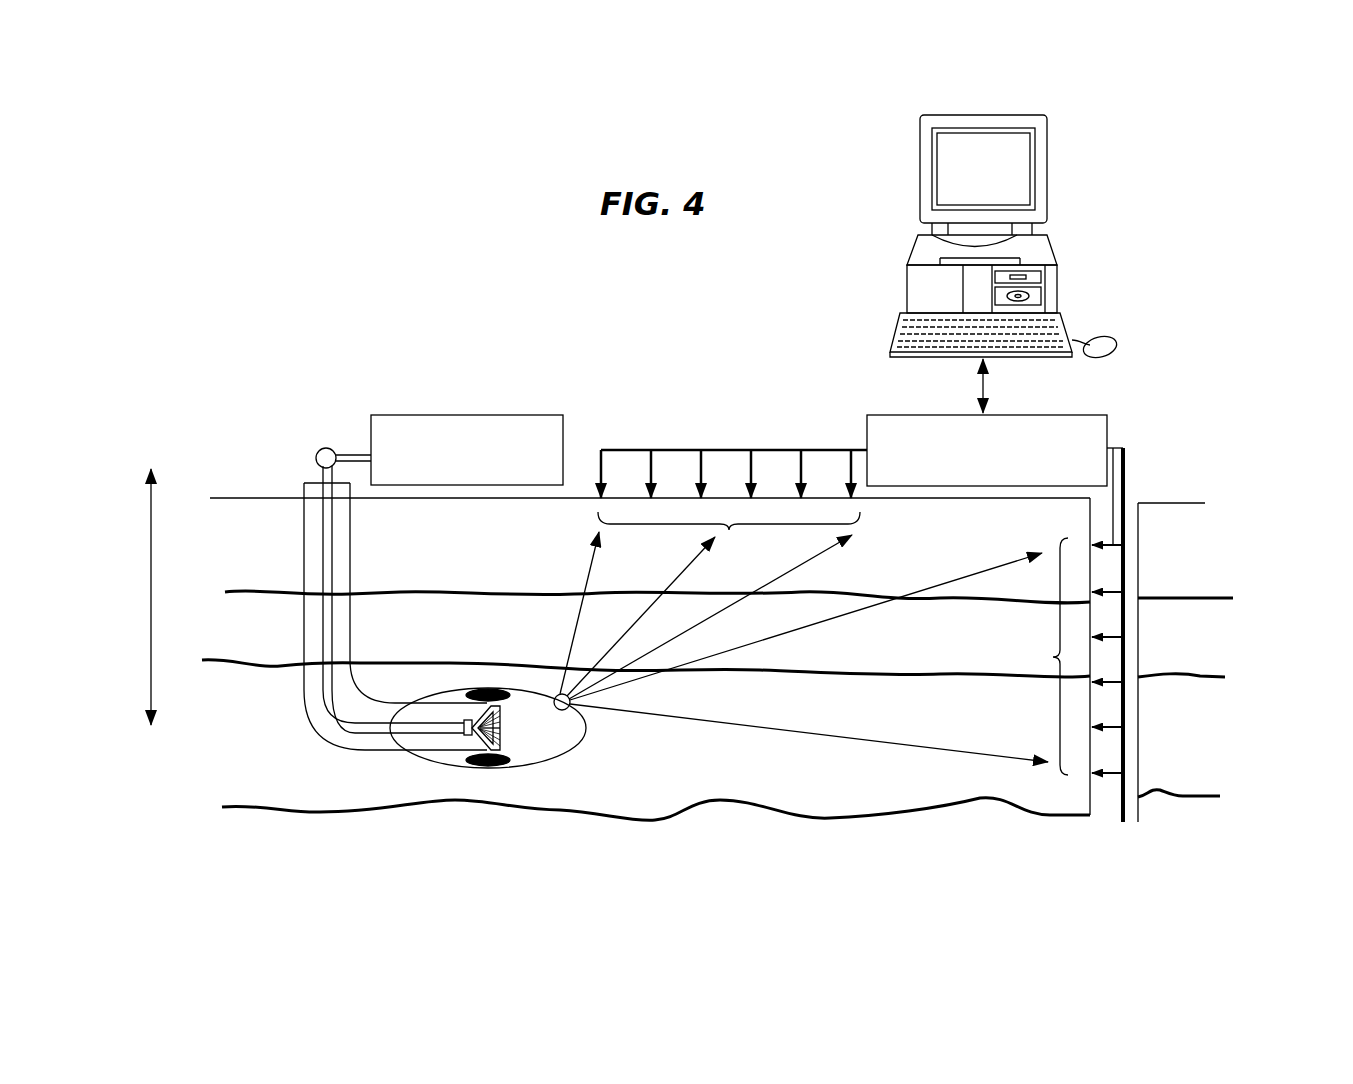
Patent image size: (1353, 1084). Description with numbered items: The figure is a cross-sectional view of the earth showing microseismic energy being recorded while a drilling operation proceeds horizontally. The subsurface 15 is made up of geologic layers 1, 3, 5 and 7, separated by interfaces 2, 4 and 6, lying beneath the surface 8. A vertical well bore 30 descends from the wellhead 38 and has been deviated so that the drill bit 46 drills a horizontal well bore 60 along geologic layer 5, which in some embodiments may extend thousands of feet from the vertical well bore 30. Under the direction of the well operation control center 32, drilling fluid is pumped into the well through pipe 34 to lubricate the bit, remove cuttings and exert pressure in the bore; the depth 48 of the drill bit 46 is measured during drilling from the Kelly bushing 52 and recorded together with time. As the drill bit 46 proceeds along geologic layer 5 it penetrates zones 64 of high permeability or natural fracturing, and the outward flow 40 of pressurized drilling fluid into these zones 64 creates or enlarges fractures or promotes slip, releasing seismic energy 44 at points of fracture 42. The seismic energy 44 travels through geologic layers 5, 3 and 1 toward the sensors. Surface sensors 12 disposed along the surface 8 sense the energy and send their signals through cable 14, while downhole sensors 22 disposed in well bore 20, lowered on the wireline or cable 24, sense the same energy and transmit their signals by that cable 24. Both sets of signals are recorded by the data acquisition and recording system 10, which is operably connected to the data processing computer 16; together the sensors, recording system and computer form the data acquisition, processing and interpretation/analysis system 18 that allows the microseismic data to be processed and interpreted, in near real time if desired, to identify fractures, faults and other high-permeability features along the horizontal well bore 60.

The geologic layer 1 is at (838, 586).
The interface 2 is at (935, 600).
The geologic layer 3 is at (838, 654).
The interface 4 is at (960, 680).
The geologic layer 5 is at (838, 717).
The interface 6 is at (938, 820).
The geologic layer 7 is at (838, 879).
The surface 8 is at (208, 495).
The data acquisition and recording system 10 is at (1107, 428).
The surface sensors 12 is at (729, 536).
The cable 14 is at (730, 450).
The subsurface 15 is at (1235, 565).
The data processing computer 16 is at (1055, 248).
The data acquisition, processing and interpretation/analysis system 18 is at (1212, 242).
The well bore 20 is at (1138, 628).
The downhole sensors 22 is at (1072, 656).
The wireline or cable 24 is at (1125, 478).
The vertical well bore 30 is at (305, 540).
The well operation control center 32 is at (448, 415).
The pipe 34 is at (332, 548).
The wellhead 38 is at (304, 485).
The outward flow 40 is at (585, 745).
The point of fracture 42 is at (572, 700).
The seismic energy 44 is at (672, 576).
The drill bit 46 is at (503, 730).
The depth 48 is at (151, 567).
The Kelly bushing 52 is at (326, 448).
The horizontal well bore 60 is at (395, 752).
The zones 64 is at (508, 763).